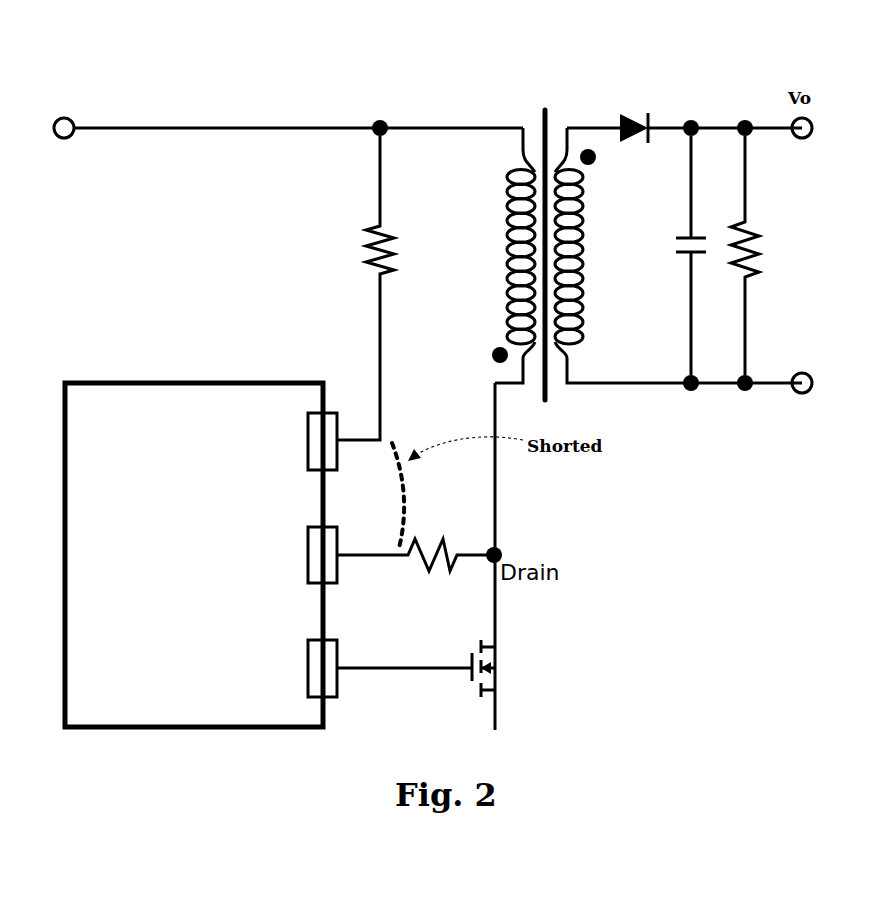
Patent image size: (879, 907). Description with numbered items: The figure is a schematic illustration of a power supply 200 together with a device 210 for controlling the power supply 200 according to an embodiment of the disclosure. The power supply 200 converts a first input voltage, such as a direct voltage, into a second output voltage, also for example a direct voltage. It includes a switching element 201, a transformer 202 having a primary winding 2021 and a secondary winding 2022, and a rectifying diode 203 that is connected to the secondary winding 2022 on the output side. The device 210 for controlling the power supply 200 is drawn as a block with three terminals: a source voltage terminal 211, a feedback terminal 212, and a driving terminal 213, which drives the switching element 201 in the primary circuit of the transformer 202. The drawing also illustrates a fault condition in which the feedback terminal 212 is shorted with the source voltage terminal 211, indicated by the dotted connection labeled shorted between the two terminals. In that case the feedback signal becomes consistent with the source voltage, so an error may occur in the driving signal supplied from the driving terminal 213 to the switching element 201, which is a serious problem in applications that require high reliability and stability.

The power supply 200 is at (270, 93).
The primary winding 2021 is at (501, 207).
The transformer 202 is at (545, 103).
The secondary winding 2022 is at (588, 208).
The rectifying diode 203 is at (633, 113).
The device for controlling the power supply 210 is at (173, 381).
The source voltage terminal 211 is at (338, 418).
The feedback terminal 212 is at (338, 527).
The driving terminal 213 is at (338, 643).
The switching element 201 is at (506, 665).